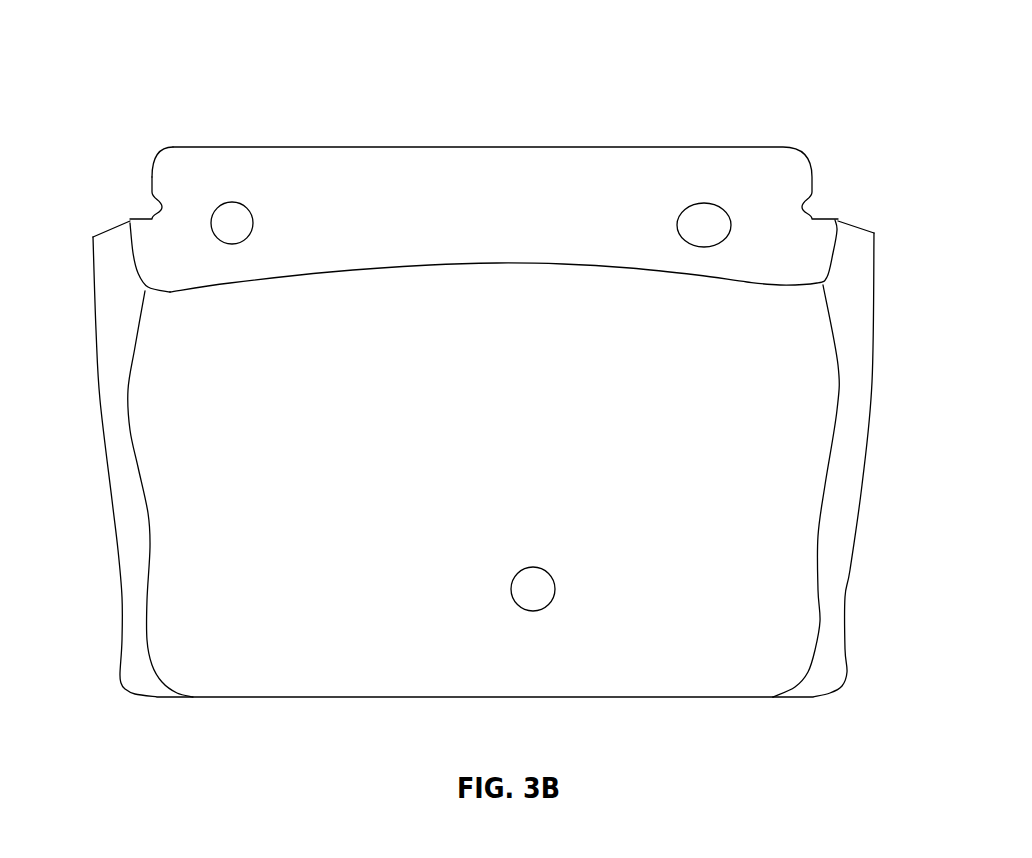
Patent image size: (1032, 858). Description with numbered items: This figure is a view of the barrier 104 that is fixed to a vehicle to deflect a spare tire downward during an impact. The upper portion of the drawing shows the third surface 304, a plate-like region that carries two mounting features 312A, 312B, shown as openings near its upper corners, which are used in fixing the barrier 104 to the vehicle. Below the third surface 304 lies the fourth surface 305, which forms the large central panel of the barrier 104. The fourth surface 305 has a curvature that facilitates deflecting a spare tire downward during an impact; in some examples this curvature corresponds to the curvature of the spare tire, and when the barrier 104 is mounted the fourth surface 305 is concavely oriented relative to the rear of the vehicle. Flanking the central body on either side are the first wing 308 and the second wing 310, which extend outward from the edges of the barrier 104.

The barrier 104 is at (128, 44).
The third surface 304 is at (528, 155).
The fourth surface 305 is at (762, 488).
The first wing 308 is at (851, 224).
The second wing 310 is at (102, 233).
The mounting feature 312A is at (710, 197).
The mounting feature 312B is at (225, 197).